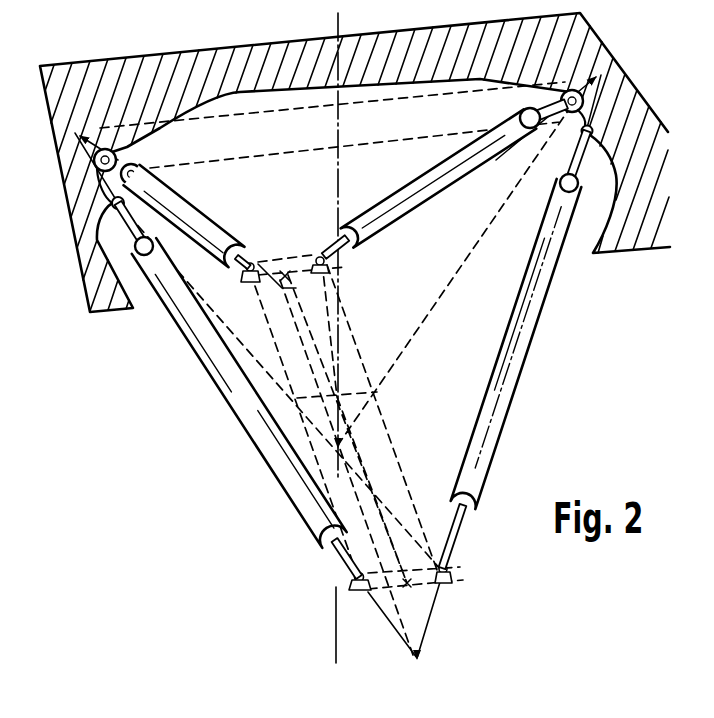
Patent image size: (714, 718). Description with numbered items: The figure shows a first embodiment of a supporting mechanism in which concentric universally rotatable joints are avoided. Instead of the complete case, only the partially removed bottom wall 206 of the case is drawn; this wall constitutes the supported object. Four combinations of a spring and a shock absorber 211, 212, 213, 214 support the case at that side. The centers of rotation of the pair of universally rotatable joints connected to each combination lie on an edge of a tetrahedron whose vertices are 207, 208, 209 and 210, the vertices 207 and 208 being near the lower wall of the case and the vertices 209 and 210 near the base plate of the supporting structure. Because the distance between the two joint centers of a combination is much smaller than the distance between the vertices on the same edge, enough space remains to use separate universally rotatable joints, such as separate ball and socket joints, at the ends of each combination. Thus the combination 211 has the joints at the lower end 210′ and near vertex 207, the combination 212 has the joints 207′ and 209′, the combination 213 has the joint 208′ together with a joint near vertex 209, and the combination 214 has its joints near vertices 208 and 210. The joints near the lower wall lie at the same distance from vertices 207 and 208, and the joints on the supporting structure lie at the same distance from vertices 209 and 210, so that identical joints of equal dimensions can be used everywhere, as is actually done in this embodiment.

The bottom wall 206 is at (355, 161).
The tetrahedron vertex 207 is at (90, 154).
The separate universally rotatable joint 207′ is at (115, 162).
The tetrahedron vertex 208 is at (565, 117).
The separate universally rotatable joint 208′ is at (572, 90).
The tetrahedron vertex 209 is at (293, 283).
The separate universally rotatable joint 209′ is at (259, 257).
The tetrahedron vertex 210 is at (433, 660).
The separate universally rotatable joint 210′ is at (352, 578).
The combination of a spring and a shock absorber 211 is at (238, 390).
The combination of a spring and a shock absorber 212 is at (187, 217).
The combination of a spring and a shock absorber 213 is at (445, 178).
The combination of a spring and a shock absorber 214 is at (515, 349).